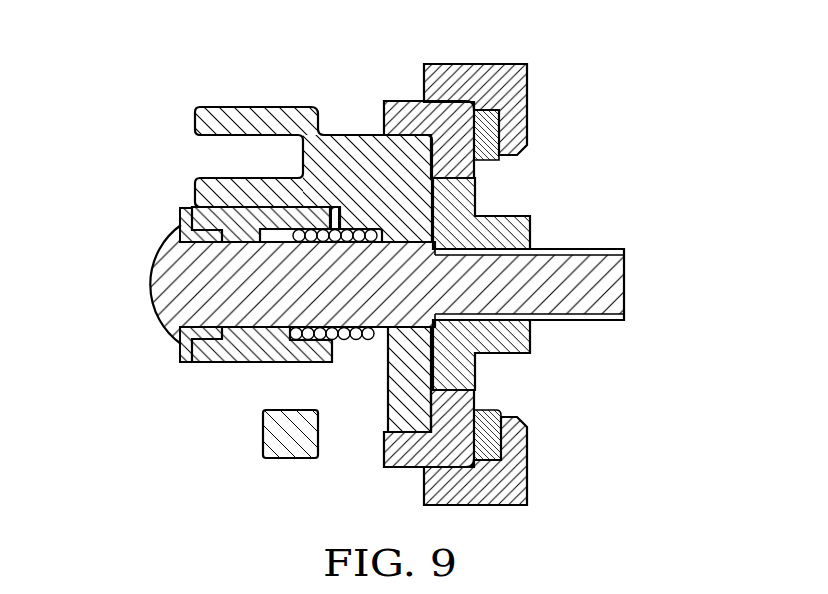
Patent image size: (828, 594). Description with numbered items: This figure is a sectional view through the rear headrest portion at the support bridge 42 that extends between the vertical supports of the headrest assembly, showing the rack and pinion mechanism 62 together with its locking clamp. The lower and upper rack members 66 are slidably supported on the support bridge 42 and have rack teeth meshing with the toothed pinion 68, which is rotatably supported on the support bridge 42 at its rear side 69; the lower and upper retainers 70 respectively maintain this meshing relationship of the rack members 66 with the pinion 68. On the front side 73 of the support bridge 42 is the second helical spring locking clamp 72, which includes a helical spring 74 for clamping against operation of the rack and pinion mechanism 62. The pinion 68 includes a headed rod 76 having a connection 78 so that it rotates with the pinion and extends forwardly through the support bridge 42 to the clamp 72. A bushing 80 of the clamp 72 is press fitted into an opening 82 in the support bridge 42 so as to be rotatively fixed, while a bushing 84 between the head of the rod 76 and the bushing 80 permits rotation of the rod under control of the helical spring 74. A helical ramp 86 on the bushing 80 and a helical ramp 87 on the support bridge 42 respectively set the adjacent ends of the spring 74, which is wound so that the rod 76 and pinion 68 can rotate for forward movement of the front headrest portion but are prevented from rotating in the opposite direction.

The support bridge 42 is at (320, 106).
The rack and pinion mechanism 62 is at (542, 372).
The rack members 66 is at (393, 115).
The pinion 68 is at (502, 222).
The rear side 69 is at (520, 465).
The retainers 70 is at (518, 86).
The second helical spring locking clamp 72 is at (338, 381).
The front side 73 is at (137, 345).
The helical spring 74 is at (370, 343).
The headed rod 76 is at (151, 284).
The connection 78 is at (520, 250).
The bushing 80 is at (232, 356).
The opening 82 is at (247, 207).
The bushing 84 is at (180, 215).
The helical ramp 86 is at (297, 332).
The helical ramp 87 is at (332, 211).